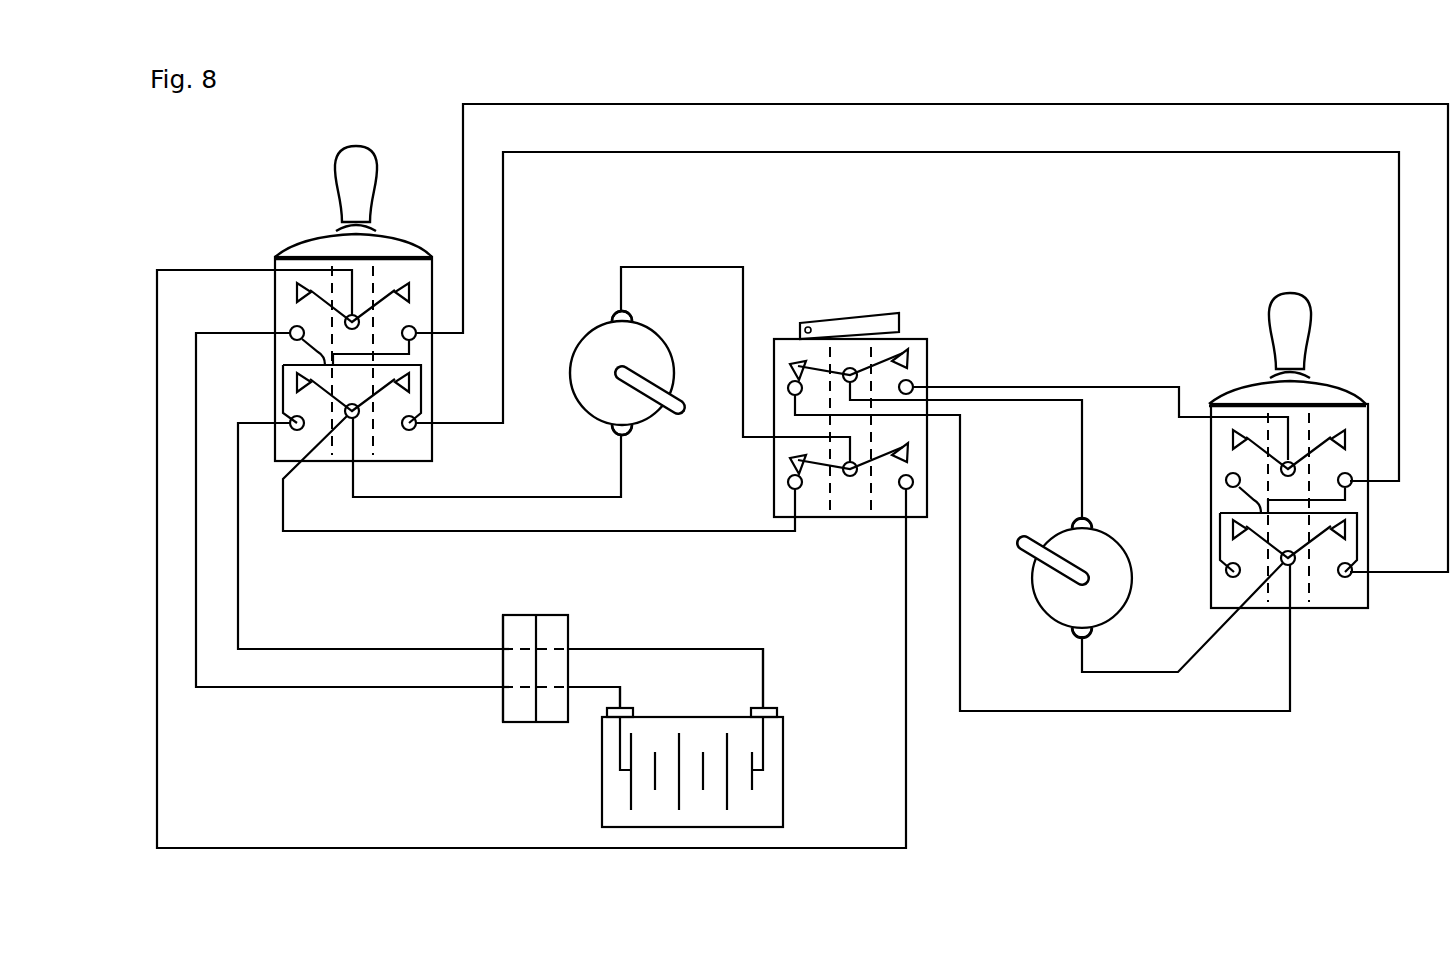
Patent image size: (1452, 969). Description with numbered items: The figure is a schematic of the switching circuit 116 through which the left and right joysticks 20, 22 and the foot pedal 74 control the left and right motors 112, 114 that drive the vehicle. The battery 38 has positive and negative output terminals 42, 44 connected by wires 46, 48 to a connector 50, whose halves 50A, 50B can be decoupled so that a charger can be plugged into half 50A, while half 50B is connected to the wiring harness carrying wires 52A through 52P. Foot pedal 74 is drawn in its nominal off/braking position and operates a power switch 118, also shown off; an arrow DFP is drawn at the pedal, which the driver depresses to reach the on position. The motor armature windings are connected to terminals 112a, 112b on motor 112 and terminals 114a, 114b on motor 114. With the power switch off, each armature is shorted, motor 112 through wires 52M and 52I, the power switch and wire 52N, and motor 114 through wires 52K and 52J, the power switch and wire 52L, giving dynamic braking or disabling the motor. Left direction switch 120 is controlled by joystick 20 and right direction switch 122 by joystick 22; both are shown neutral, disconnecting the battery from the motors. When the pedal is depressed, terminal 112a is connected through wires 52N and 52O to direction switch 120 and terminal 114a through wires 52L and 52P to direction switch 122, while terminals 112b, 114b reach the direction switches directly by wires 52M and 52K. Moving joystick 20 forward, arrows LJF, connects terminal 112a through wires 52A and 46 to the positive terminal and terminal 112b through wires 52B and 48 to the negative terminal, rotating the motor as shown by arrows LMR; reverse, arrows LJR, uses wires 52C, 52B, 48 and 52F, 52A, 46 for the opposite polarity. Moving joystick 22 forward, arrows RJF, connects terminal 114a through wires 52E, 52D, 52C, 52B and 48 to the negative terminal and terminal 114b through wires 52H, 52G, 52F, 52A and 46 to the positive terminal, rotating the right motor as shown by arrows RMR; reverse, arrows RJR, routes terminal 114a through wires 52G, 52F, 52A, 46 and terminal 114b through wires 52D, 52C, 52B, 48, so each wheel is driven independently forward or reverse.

The switching circuit 116 is at (419, 97).
The left joystick 20 is at (357, 146).
The right joystick 22 is at (1298, 293).
The left direction switch 120 is at (275, 260).
The right direction switch 122 is at (1212, 408).
The power switch 118 is at (778, 338).
The foot pedal 74 is at (855, 313).
The left motor 112 is at (574, 346).
The left motor armature terminal 112a is at (611, 318).
The left motor armature terminal 112b is at (610, 428).
The right motor 114 is at (1042, 612).
The right motor armature terminal 114a is at (1073, 522).
The right motor armature terminal 114b is at (1075, 637).
The battery 38 is at (718, 752).
The positive output terminal 42 is at (628, 708).
The negative output terminal 44 is at (757, 708).
The wire 46 is at (600, 686).
The wire 48 is at (650, 648).
The connector 50 is at (511, 677).
The connector half 50A is at (558, 712).
The connector half 50B is at (520, 712).
The wire 52A is at (420, 686).
The wire 52B is at (385, 648).
The wire 52C is at (293, 345).
The wire 52D is at (926, 103).
The wire 52E is at (1230, 495).
The wire 52F is at (423, 362).
The wire 52G is at (962, 151).
The wire 52H is at (1218, 530).
The wire 52I is at (735, 529).
The wire 52J is at (1272, 710).
The wire 52K is at (1170, 670).
The wire 52L is at (1078, 470).
The wire 52M is at (578, 496).
The wire 52N is at (720, 265).
The wire 52O is at (535, 847).
The wire 52P is at (1150, 386).
The left joystick forward arrow LJF is at (323, 167).
The left joystick reverse arrow LJR is at (388, 167).
The right joystick forward arrow RJF is at (1260, 313).
The right joystick reverse arrow RJR is at (1325, 313).
The left motor rotation arrow LMR is at (703, 410).
The right motor rotation arrow RMR is at (1005, 548).
The depress foot pedal DFP is at (906, 306).